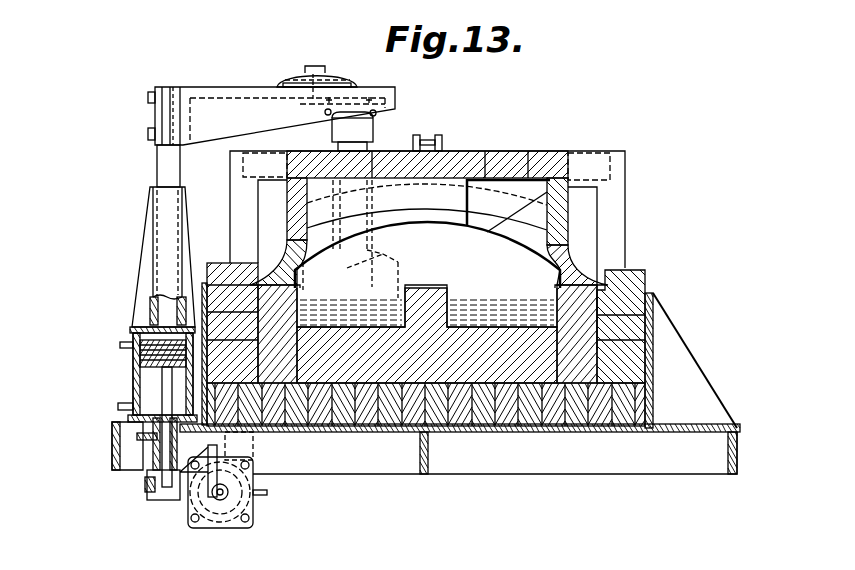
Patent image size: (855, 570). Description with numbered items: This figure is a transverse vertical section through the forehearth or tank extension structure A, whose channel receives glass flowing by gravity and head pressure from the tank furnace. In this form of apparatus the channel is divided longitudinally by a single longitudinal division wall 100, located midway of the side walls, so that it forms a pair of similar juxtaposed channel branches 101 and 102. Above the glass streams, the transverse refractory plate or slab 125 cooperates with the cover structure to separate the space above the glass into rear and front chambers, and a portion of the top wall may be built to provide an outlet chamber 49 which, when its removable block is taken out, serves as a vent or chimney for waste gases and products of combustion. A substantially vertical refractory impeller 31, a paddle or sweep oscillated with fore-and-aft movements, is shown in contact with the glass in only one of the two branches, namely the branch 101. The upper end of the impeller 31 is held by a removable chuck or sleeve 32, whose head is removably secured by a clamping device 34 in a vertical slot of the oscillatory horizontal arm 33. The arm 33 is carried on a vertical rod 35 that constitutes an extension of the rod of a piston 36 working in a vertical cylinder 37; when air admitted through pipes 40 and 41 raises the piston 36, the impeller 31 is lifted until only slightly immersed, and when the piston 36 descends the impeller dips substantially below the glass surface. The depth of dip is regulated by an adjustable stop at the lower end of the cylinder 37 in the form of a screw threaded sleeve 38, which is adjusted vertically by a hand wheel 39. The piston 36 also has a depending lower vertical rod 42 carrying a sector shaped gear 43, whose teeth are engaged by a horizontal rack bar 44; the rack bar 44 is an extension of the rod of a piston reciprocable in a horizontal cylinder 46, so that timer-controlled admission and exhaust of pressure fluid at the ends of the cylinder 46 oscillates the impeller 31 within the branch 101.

The refractory impeller 31 is at (383, 254).
The chuck 32 is at (368, 130).
The oscillatory horizontal arm 33 is at (200, 102).
The clamping device 34 is at (323, 85).
The vertical rod 35 is at (163, 182).
The piston 36 is at (142, 362).
The vertical cylinder 37 is at (133, 378).
The screw threaded sleeve 38 is at (155, 450).
The hand wheel 39 is at (140, 437).
The pipe 40 is at (120, 406).
The pipe 41 is at (126, 345).
The lower vertical rod 42 is at (165, 392).
The sector shaped gear 43 is at (200, 497).
The rack bar 44 is at (230, 495).
The horizontal cylinder 46 is at (233, 481).
The outlet chamber 49 is at (507, 223).
The longitudinal division wall 100 is at (470, 282).
The channel branch 101 is at (375, 330).
The channel branch 102 is at (527, 330).
The transverse refractory plate 125 is at (429, 218).
The forehearth structure A is at (650, 285).